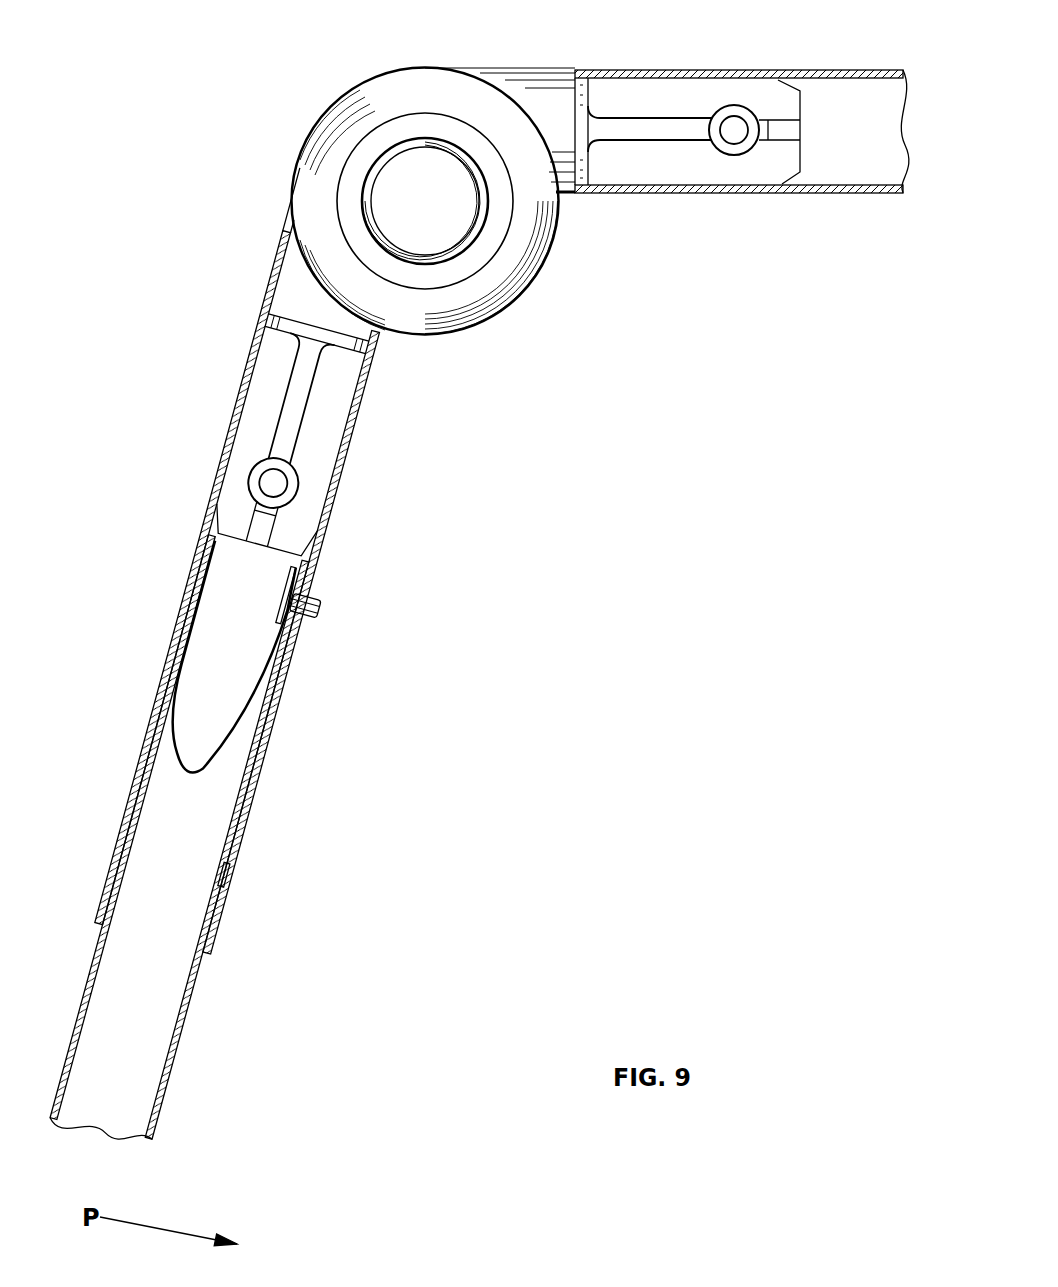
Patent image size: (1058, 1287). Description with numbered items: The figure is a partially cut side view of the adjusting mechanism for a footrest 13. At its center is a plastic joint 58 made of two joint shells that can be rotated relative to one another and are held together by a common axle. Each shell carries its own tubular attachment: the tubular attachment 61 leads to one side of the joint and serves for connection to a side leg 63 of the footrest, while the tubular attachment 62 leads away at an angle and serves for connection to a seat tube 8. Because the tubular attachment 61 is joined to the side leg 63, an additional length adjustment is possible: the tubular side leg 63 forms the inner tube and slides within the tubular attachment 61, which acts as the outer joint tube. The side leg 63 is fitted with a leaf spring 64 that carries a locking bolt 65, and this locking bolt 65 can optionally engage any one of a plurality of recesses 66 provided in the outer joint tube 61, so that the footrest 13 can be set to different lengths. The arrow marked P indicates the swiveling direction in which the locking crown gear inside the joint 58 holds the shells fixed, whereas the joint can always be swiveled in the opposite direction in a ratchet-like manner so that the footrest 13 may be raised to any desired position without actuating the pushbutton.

The seat tube 8 is at (841, 70).
The footrest 13 is at (140, 700).
The plastic joint 58 is at (557, 258).
The tubular attachment 61 is at (350, 459).
The tubular attachment 62 is at (617, 85).
The side leg 63 is at (177, 1062).
The leaf spring 64 is at (243, 721).
The locking bolt 65 is at (318, 611).
The recesses 66 is at (300, 622).